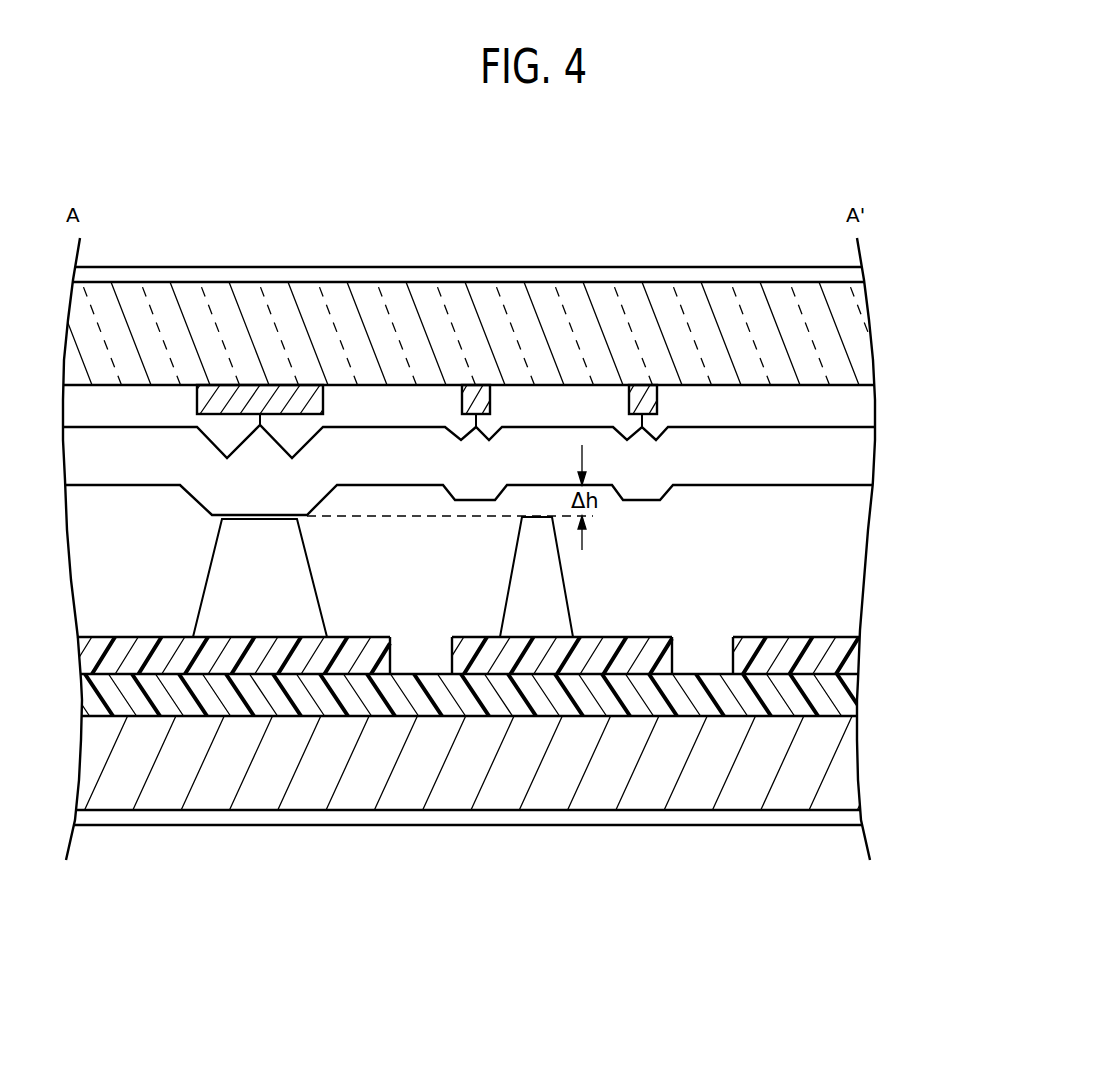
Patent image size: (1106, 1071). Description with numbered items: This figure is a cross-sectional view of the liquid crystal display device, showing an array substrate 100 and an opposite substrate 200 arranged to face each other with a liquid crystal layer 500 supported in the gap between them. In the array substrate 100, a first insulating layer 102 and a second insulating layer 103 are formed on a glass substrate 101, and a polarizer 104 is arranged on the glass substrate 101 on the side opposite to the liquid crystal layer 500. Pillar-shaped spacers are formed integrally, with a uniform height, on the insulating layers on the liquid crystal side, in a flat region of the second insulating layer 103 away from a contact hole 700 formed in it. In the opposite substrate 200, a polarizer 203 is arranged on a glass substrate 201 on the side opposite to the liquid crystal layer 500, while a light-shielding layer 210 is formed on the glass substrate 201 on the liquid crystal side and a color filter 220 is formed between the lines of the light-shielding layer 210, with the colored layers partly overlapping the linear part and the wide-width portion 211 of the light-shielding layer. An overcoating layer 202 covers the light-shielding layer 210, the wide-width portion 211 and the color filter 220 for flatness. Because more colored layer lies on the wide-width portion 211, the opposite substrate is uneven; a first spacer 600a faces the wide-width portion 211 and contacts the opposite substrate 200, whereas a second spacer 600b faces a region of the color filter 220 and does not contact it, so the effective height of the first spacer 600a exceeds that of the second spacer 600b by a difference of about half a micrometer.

The array substrate 100 is at (549, 711).
The glass substrate 101 is at (857, 757).
The first insulating layer 102 is at (853, 695).
The second insulating layer 103 is at (855, 655).
The polarizer 104 is at (503, 813).
The opposite substrate 200 is at (548, 359).
The glass substrate 201 is at (870, 336).
The overcoating layer 202 is at (503, 476).
The polarizer 203 is at (877, 272).
The light-shielding layer 210 is at (473, 392).
The wide-width portion 211 is at (270, 392).
The color filter 220 is at (870, 405).
The liquid crystal layer 500 is at (862, 568).
The first spacer 600a is at (260, 623).
The second spacer 600b is at (537, 623).
The contact hole 700 is at (422, 648).